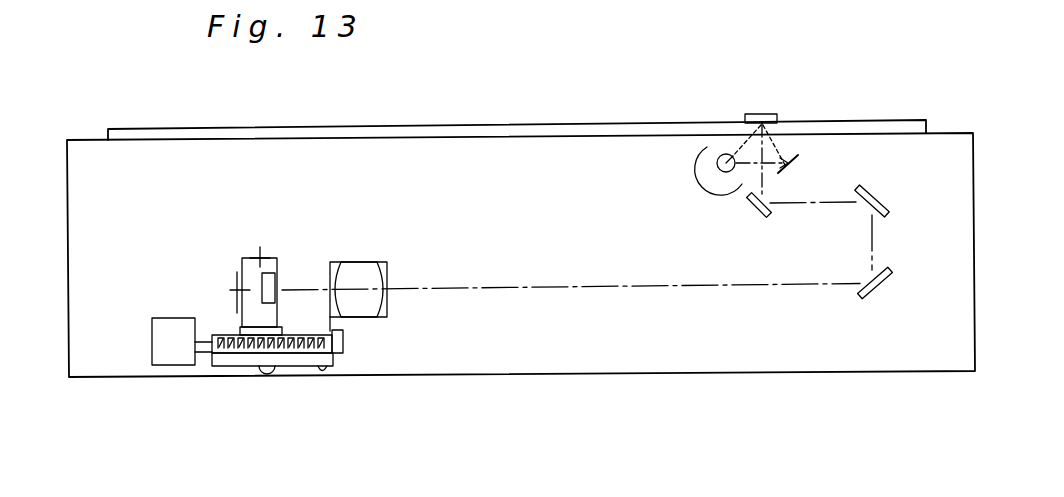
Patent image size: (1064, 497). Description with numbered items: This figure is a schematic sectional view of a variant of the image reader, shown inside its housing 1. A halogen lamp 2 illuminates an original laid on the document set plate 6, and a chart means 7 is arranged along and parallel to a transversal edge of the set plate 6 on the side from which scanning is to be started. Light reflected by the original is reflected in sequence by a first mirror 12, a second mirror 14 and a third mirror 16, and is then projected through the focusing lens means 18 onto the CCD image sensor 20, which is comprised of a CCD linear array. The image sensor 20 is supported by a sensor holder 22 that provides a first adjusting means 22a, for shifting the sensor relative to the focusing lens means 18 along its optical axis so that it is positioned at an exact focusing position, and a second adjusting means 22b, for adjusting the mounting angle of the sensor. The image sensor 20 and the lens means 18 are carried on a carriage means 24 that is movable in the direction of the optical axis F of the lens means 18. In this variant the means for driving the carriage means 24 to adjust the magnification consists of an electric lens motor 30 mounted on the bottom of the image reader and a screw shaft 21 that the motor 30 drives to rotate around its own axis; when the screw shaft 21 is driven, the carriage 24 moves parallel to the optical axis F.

The housing 1 is at (977, 311).
The halogen lamp 2 is at (702, 172).
The document set plate 6 is at (875, 120).
The chart means 7 is at (760, 113).
The first mirror 12 is at (748, 205).
The second mirror 14 is at (872, 197).
The third mirror 16 is at (878, 290).
The focusing lens means 18 is at (363, 272).
The CCD image sensor 20 is at (270, 283).
The screw shaft 21 is at (242, 343).
The sensor holder 22 is at (241, 246).
The first adjusting means 22a is at (227, 288).
The second adjusting means 22b is at (260, 244).
The carriage means 24 is at (322, 372).
The electric motor (lens motor) 30 is at (170, 330).
The optical axis F is at (495, 288).